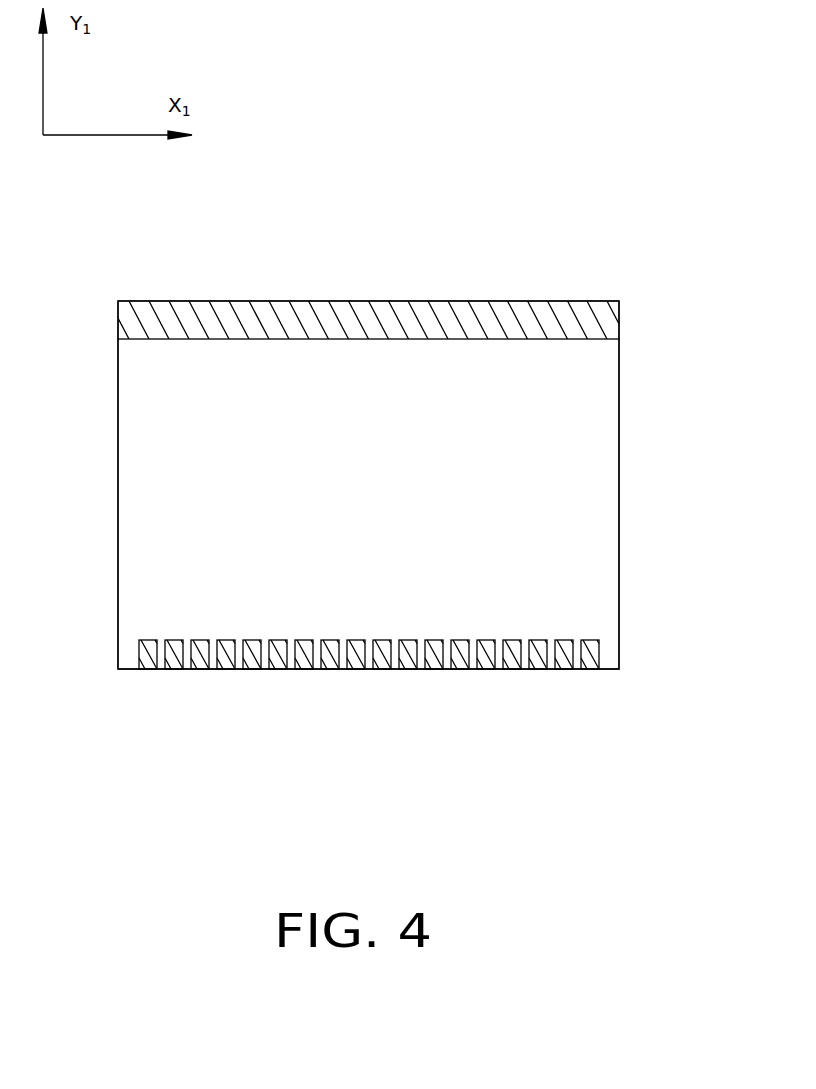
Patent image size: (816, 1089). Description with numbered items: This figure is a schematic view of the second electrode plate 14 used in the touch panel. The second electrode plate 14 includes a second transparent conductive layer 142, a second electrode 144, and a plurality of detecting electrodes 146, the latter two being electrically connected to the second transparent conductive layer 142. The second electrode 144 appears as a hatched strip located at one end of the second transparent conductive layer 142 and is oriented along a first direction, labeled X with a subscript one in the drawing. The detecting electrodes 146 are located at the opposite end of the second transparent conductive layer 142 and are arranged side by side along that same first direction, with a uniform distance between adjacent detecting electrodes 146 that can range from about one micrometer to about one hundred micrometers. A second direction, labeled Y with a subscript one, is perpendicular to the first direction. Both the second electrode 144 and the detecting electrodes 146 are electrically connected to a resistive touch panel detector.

The second electrode plate 14 is at (406, 236).
The second transparent conductive layer 142 is at (537, 453).
The second electrode 144 is at (598, 324).
The detecting electrodes 146 is at (587, 651).